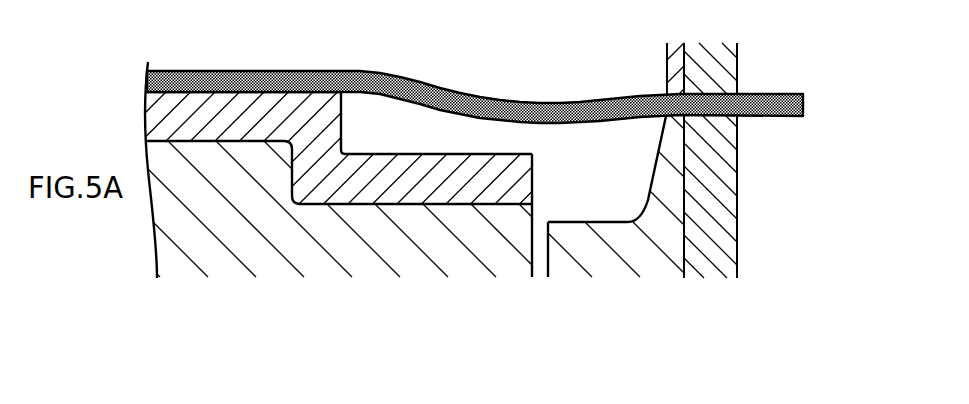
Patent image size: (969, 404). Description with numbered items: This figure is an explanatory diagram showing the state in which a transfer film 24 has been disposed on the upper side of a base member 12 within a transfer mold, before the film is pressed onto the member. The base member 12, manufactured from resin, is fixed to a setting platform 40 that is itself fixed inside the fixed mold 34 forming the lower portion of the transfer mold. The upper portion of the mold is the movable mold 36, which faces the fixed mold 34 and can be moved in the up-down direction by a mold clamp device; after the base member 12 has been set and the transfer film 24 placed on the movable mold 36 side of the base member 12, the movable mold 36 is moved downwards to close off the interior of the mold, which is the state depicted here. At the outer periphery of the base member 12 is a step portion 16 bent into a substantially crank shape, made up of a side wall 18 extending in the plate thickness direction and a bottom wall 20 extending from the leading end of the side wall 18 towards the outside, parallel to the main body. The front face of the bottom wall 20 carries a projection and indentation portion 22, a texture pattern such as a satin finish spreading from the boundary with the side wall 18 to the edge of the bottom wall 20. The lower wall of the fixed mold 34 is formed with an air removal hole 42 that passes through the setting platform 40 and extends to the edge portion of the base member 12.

The base member 12 is at (237, 141).
The step portion 16 is at (353, 207).
The side wall 18 is at (292, 181).
The bottom wall 20 is at (408, 207).
The projection and indentation portion 22 is at (530, 152).
The transfer film 24 is at (527, 103).
The fixed mold 34 is at (737, 230).
The movable mold 36 is at (737, 63).
The setting platform 40 is at (457, 263).
The air removal hole 42 is at (541, 273).